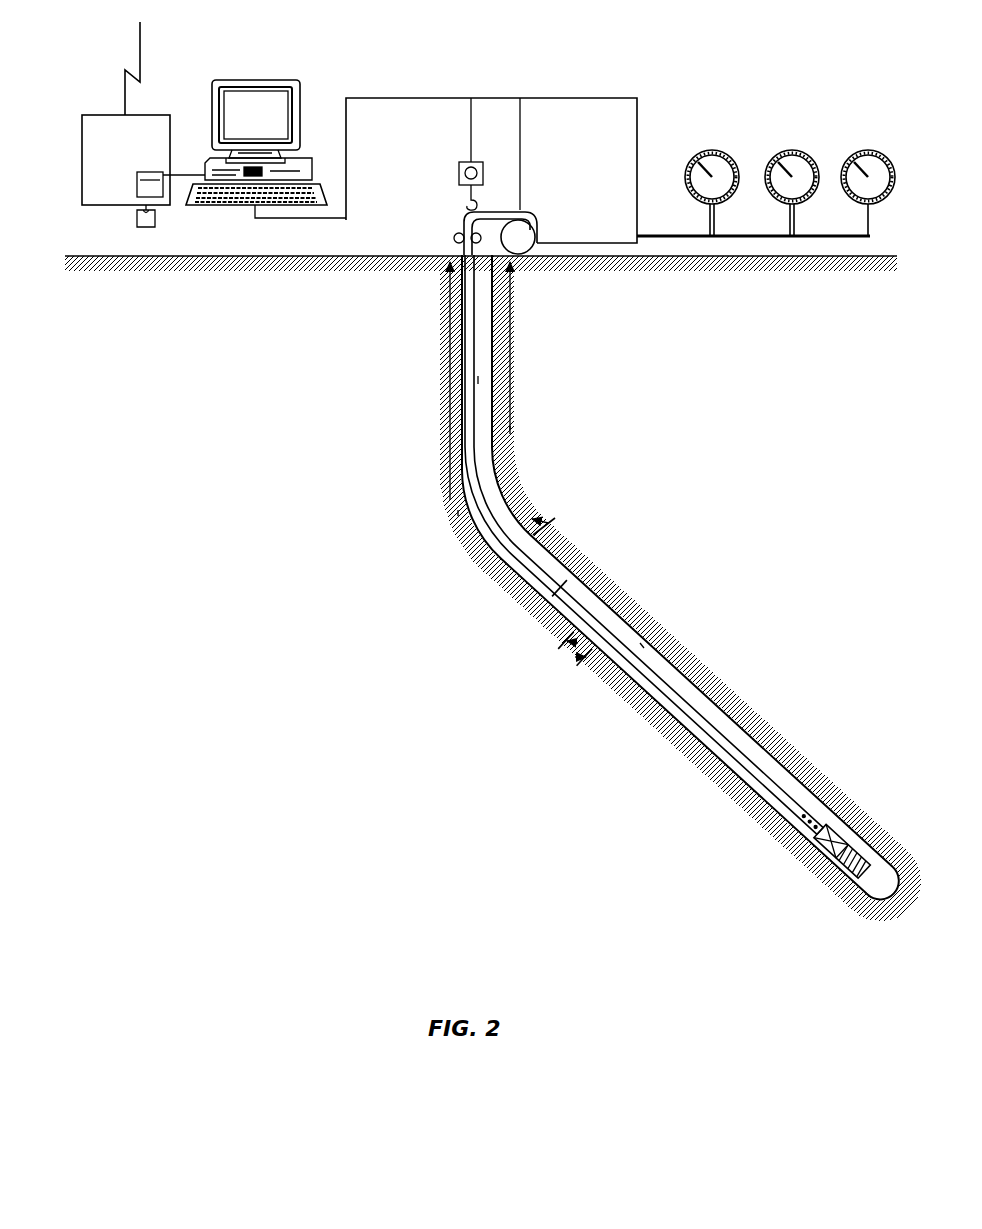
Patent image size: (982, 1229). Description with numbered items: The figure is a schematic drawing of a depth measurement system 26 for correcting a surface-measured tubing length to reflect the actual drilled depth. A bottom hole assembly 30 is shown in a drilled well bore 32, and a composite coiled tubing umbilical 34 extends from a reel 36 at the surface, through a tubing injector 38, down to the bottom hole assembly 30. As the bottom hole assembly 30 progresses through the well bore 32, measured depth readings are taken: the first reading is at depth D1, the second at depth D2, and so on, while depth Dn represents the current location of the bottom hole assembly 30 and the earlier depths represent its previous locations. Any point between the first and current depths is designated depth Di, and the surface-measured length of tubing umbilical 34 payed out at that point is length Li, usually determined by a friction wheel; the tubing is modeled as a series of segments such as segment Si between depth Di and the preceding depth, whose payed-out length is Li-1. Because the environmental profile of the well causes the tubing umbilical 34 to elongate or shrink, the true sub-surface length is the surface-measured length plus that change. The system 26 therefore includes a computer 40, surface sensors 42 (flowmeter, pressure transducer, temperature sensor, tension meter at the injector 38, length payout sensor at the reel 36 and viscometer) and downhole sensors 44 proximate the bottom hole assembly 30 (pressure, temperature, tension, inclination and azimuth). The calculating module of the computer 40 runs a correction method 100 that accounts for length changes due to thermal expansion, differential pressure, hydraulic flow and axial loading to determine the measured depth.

The system 26 is at (438, 58).
The bottom hole assembly 30 is at (868, 847).
The well bore 32 is at (583, 588).
The composite coiled tubing umbilical 34 is at (507, 212).
The reel 36 is at (530, 237).
The tubing injector 38 is at (455, 235).
The computer 40 is at (186, 108).
The surface sensors 42 is at (777, 140).
The downhole sensors 44 is at (800, 850).
The correction method 100 is at (103, 113).
The first depth D1 is at (478, 380).
The second depth D2 is at (487, 502).
The depth point Di is at (640, 646).
The current depth Dn is at (833, 830).
The surface-measured length Li is at (458, 513).
The surface-measured length at preceding depth Li-1 is at (510, 433).
The segment Si is at (593, 614).